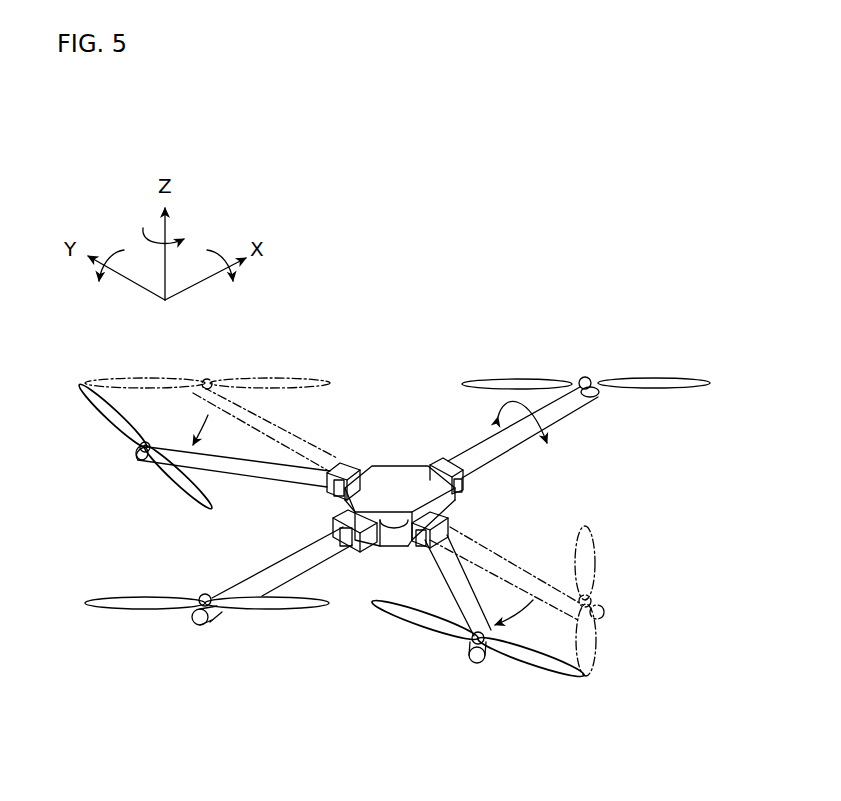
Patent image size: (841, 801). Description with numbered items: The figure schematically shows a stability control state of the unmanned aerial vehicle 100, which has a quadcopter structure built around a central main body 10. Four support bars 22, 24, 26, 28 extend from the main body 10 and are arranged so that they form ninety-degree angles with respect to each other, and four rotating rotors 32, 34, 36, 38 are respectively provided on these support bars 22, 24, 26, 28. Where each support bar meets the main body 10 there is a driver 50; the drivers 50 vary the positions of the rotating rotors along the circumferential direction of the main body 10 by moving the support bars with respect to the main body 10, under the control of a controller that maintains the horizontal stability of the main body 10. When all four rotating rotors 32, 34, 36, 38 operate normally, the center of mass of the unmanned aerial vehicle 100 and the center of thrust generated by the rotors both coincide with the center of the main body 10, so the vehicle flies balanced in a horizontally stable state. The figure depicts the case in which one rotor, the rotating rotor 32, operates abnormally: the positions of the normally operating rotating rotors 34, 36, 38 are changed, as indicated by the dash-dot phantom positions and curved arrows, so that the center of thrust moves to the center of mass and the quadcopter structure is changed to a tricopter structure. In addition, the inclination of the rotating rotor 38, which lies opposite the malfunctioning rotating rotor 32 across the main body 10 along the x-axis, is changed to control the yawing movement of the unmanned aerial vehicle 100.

The unmanned aerial vehicle 100 is at (392, 165).
The main body 10 is at (387, 478).
The driver 50 is at (354, 461).
The support bar 22 is at (198, 623).
The support bar 24 is at (137, 463).
The support bar 26 is at (480, 664).
The support bar 28 is at (569, 406).
The rotating rotor 32 is at (270, 610).
The rotating rotor 34 is at (185, 485).
The rotating rotor 36 is at (537, 660).
The rotating rotor 38 is at (538, 381).